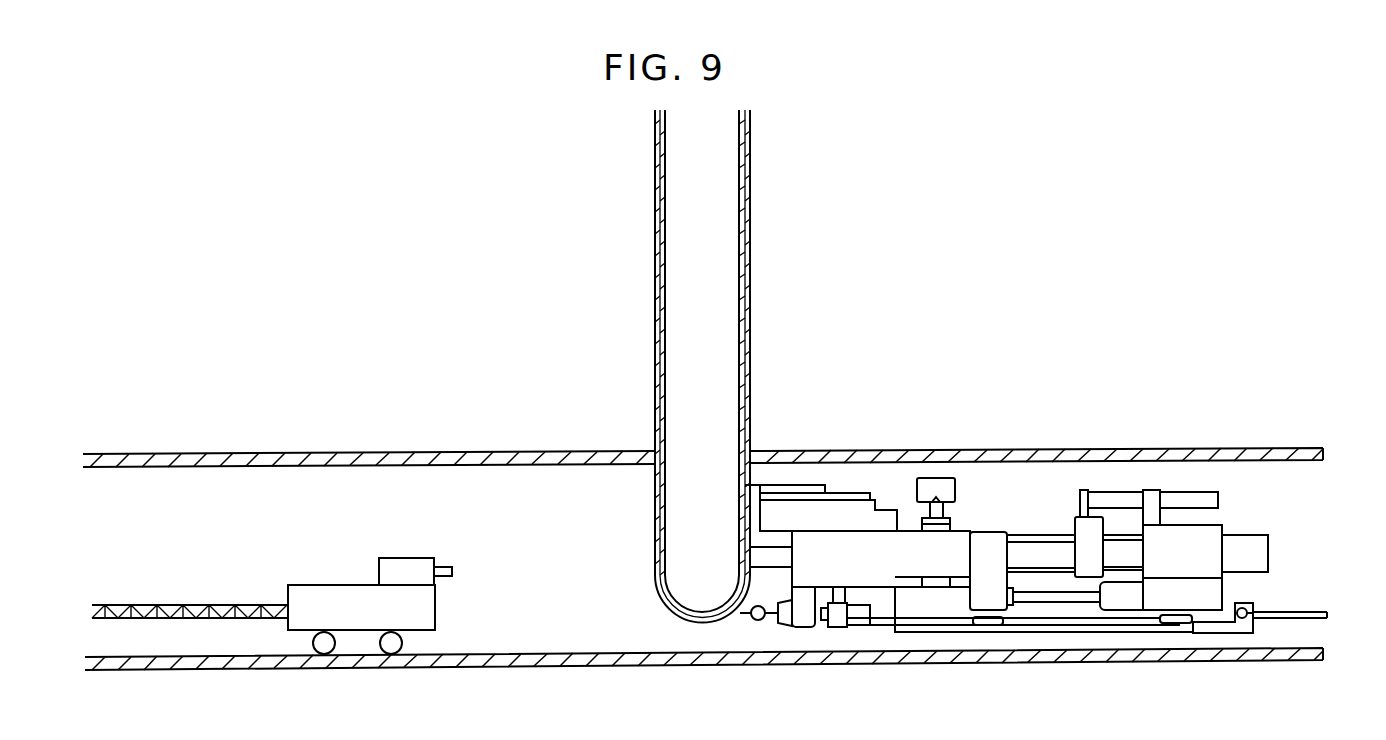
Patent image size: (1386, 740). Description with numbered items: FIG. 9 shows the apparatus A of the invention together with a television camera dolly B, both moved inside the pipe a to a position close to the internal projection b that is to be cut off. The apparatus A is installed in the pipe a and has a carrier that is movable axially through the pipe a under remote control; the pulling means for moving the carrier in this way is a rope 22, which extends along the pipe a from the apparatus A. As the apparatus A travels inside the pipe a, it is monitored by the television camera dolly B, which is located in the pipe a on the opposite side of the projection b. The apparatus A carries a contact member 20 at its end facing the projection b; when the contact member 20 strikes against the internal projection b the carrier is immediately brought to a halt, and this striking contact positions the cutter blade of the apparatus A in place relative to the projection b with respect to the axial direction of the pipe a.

The apparatus A is at (1022, 481).
The television camera dolly B is at (386, 535).
The pipe a is at (1215, 450).
The internal projection b is at (673, 512).
The contact member 20 is at (768, 557).
The rope 22 is at (1295, 608).